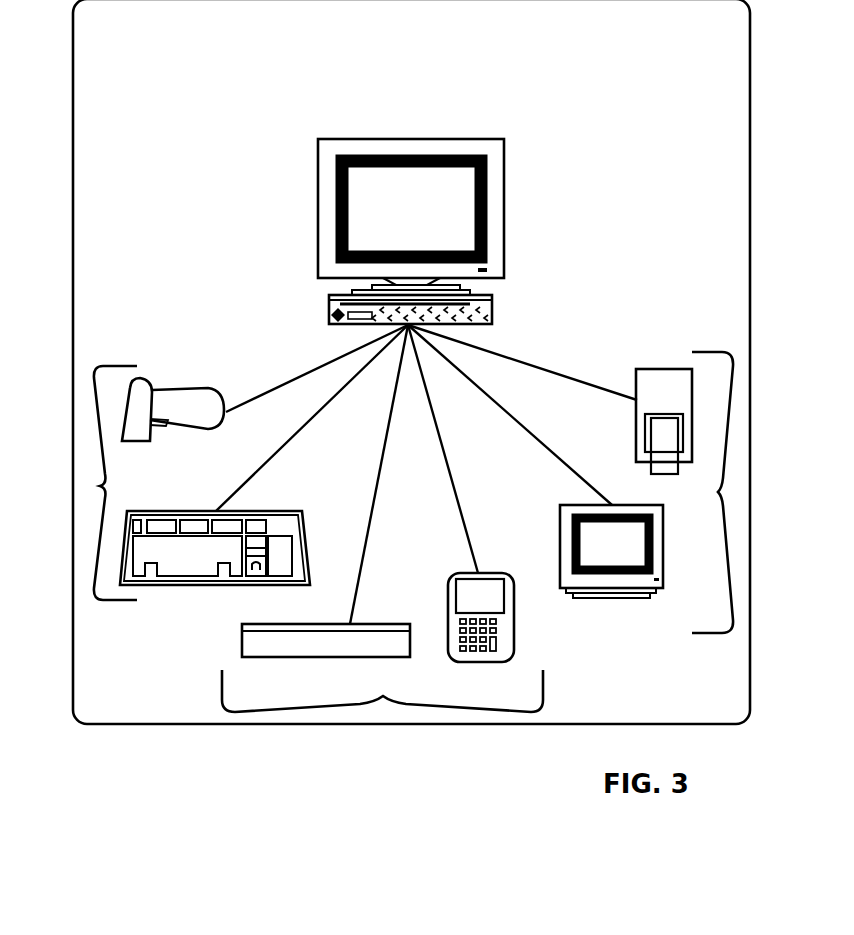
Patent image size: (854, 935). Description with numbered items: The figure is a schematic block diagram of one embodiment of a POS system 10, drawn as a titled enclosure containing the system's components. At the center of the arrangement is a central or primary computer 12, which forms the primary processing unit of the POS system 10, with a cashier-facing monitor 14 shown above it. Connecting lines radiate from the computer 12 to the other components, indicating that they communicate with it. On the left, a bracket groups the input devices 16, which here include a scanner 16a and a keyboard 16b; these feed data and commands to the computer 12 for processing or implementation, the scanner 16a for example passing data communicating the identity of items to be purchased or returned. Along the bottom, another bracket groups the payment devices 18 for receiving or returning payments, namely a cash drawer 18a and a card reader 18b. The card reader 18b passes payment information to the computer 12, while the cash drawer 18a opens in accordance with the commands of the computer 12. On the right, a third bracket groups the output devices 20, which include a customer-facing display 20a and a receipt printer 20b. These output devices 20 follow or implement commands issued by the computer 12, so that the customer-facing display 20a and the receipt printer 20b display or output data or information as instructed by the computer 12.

The POS system 10 is at (582, 64).
The computer 12 is at (508, 295).
The monitor 14 is at (303, 180).
The input devices 16 is at (100, 486).
The scanner 16a is at (185, 407).
The keyboard 16b is at (280, 518).
The payment devices 18 is at (383, 698).
The cash drawer 18a is at (327, 641).
The card reader 18b is at (470, 574).
The output devices 20 is at (718, 492).
The customer-facing display 20a is at (607, 557).
The receipt printer 20b is at (656, 390).